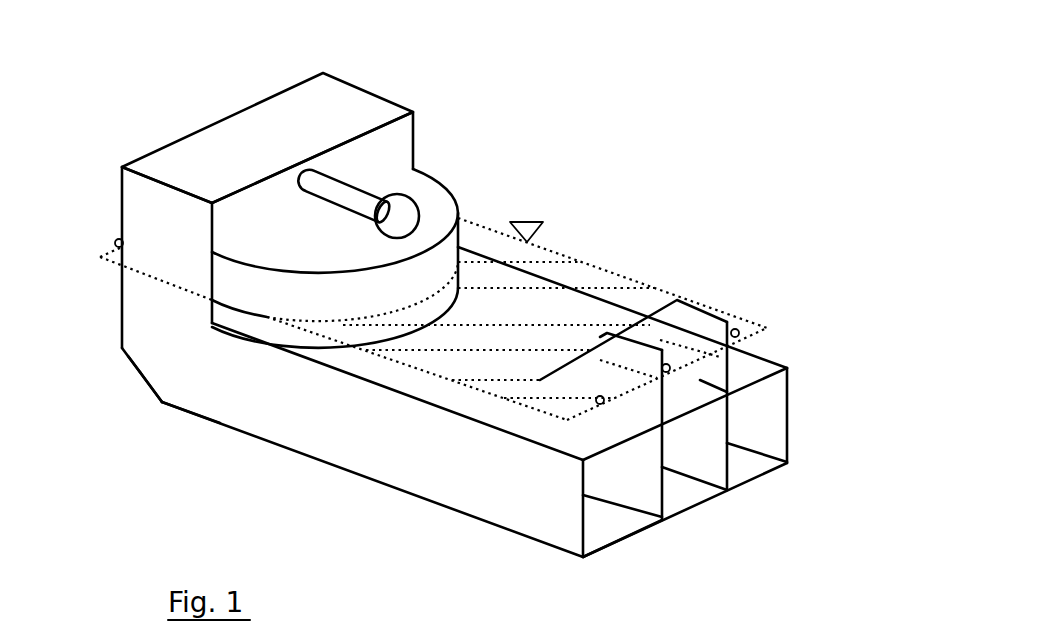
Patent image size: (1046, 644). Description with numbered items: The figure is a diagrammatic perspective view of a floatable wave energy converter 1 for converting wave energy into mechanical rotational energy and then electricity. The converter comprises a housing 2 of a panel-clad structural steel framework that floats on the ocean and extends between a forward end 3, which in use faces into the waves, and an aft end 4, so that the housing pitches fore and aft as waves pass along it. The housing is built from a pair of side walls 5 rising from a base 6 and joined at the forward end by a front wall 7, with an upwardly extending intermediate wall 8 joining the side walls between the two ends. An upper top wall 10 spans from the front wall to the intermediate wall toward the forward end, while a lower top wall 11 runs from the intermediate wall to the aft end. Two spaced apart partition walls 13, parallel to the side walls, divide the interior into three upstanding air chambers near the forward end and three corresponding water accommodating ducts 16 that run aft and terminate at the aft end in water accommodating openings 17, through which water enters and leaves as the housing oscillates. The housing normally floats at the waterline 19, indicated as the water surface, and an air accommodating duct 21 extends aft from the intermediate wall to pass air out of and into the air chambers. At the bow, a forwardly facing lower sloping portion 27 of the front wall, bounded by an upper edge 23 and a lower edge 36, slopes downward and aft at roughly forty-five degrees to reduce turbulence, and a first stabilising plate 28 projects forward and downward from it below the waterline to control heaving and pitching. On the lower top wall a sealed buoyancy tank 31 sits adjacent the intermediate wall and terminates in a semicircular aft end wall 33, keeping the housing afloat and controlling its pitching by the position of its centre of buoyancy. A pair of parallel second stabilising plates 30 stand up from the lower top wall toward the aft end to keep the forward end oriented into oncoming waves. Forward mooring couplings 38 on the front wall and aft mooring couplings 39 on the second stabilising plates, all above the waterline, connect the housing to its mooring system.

The floatable wave energy converter 1 is at (618, 158).
The housing 2 is at (460, 485).
The forward end 3 is at (121, 303).
The aft end 4 is at (680, 505).
The side walls 5 is at (300, 425).
The base 6 is at (602, 554).
The front wall 7 is at (120, 192).
The intermediate wall 8 is at (247, 212).
The upper top wall 10 is at (267, 123).
The lower top wall 11 is at (548, 433).
The partition walls 13 is at (623, 482).
The water accommodating ducts 16 is at (622, 533).
The water accommodating openings 17 is at (630, 523).
The waterline 19 is at (197, 293).
The air accommodating duct 21 is at (358, 187).
The upper edge 23 is at (121, 352).
The lower sloping portion 27 is at (132, 363).
The first stabilising plate 28 is at (140, 373).
The second stabilising plates 30 is at (670, 307).
The buoyancy tank 31 is at (427, 187).
The aft end wall 33 is at (340, 298).
The lower edge 36 is at (162, 403).
The forward mooring couplings 38 is at (114, 243).
The aft mooring couplings 39 is at (739, 331).